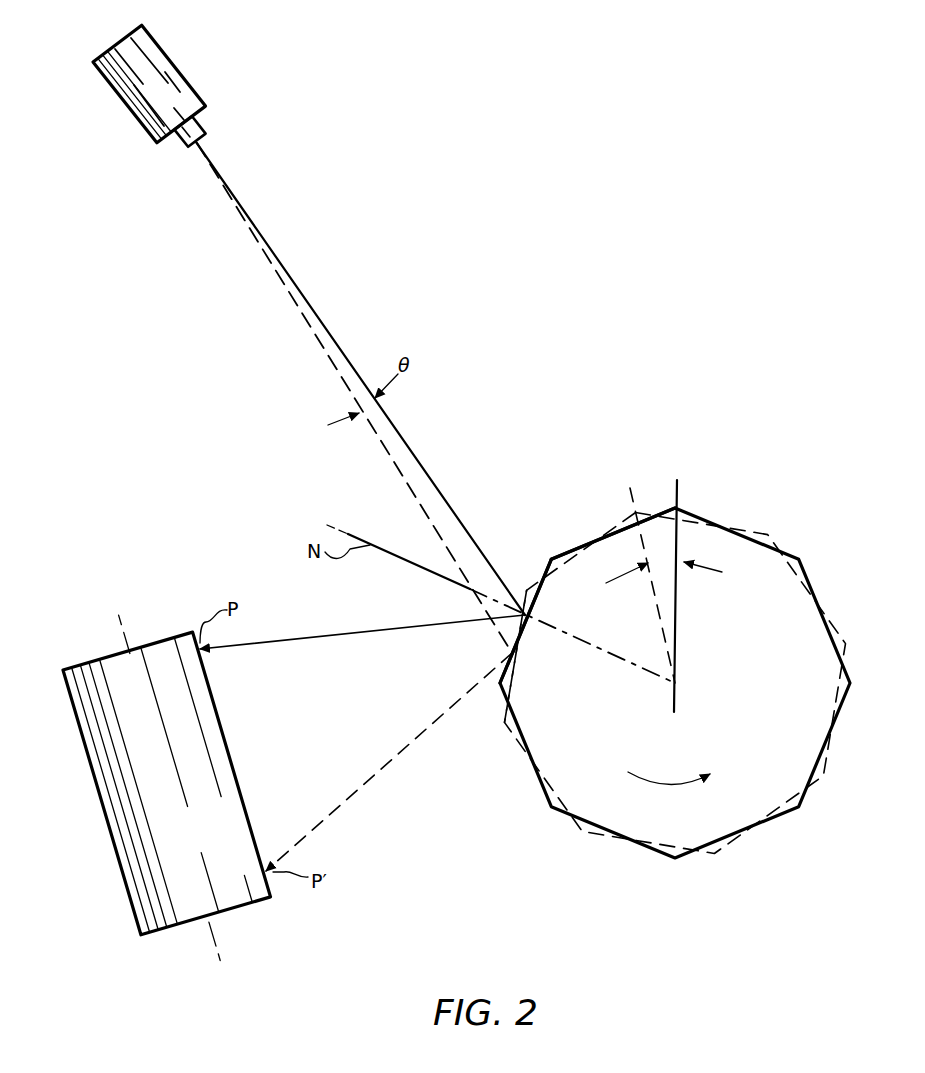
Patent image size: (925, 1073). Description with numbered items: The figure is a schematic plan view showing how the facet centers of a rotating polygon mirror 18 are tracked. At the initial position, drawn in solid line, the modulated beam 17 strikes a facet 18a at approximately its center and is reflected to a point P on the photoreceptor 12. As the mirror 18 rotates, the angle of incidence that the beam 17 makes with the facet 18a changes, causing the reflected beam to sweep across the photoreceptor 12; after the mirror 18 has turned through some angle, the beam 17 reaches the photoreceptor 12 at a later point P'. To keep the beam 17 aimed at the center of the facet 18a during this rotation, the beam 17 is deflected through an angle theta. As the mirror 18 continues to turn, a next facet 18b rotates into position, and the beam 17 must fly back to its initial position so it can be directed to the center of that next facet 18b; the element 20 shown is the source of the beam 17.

The photoreceptor 12 is at (240, 807).
The modulated beam 17 is at (388, 458).
The polygon mirror 18 is at (675, 643).
The facet 18a is at (540, 595).
The next facet 18b is at (567, 545).
The laser 20 is at (187, 88).